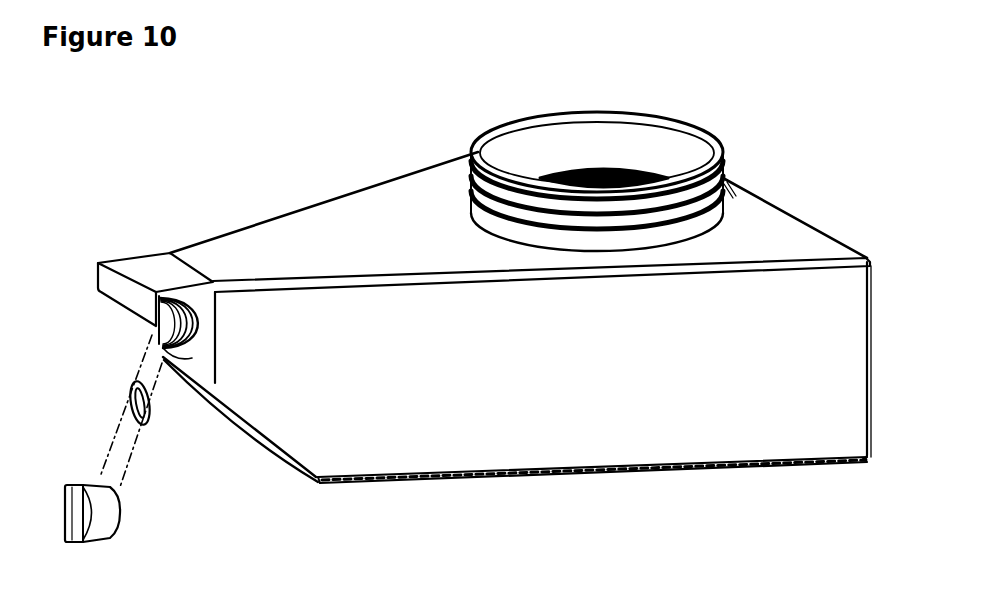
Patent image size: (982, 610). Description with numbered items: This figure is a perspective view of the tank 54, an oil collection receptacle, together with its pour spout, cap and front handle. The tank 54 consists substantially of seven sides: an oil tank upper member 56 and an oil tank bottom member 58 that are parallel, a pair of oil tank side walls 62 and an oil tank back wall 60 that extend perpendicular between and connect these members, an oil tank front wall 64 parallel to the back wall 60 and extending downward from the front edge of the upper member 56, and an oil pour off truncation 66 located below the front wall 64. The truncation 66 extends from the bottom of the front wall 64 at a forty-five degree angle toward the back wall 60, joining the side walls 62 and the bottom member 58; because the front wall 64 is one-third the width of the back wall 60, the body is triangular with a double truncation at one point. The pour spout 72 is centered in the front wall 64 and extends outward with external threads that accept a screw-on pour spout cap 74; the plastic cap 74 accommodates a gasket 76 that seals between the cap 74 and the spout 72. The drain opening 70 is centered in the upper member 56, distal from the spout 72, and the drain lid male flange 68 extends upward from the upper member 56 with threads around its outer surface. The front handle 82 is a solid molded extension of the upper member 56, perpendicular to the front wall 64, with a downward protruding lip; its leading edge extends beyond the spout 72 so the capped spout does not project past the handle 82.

The tank 54 is at (361, 220).
The oil tank upper member 56 is at (335, 253).
The oil tank bottom member 58 is at (510, 483).
The oil tank back wall 60 is at (858, 237).
The oil tank side walls 62 is at (590, 355).
The oil tank front wall 64 is at (192, 358).
The oil pour off truncation 66 is at (240, 423).
The drain lid male flange 68 is at (697, 121).
The oil tank drain opening 70 is at (593, 152).
The pour spout 72 is at (155, 342).
The pour spout cap 74 is at (95, 546).
The pour spout lid gasket 76 is at (126, 401).
The oil tank front handle 82 is at (120, 250).